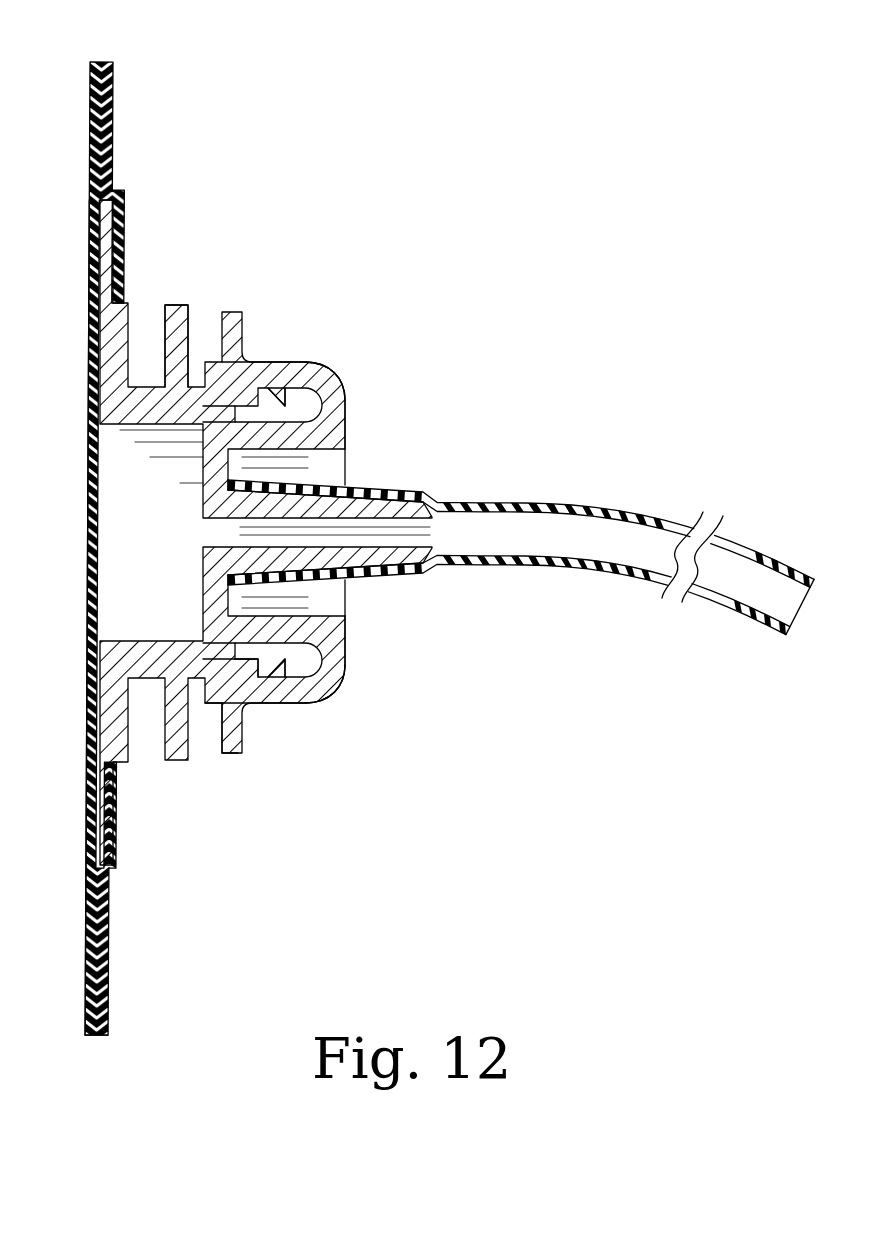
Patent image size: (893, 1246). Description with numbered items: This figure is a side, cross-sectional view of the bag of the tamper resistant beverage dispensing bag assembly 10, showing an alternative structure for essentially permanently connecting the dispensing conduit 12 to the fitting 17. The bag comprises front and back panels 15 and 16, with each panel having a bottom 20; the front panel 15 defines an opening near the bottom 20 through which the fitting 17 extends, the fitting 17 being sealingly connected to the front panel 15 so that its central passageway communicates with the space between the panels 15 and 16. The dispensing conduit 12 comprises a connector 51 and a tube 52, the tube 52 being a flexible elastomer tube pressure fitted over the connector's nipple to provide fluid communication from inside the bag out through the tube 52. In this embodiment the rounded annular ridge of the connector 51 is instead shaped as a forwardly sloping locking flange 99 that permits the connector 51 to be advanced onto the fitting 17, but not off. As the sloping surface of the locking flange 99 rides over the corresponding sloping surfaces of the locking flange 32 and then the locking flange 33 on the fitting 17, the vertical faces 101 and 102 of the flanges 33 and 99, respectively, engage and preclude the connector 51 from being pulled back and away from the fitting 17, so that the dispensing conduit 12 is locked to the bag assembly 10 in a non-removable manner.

The tamper resistant beverage dispensing bag assembly 10 is at (419, 560).
The dispensing conduit 12 is at (340, 532).
The front panel 15 is at (110, 584).
The back panel 16 is at (86, 920).
The fitting 17 is at (181, 295).
The bottom 20 is at (91, 1037).
The locking flange 32 is at (346, 388).
The first locking flange 33 is at (270, 386).
The connector 51 is at (336, 357).
The tube 52 is at (666, 519).
The forwardly sloping locking flange 99 is at (240, 680).
The vertical face 101 is at (250, 673).
The vertical face 102 is at (340, 671).